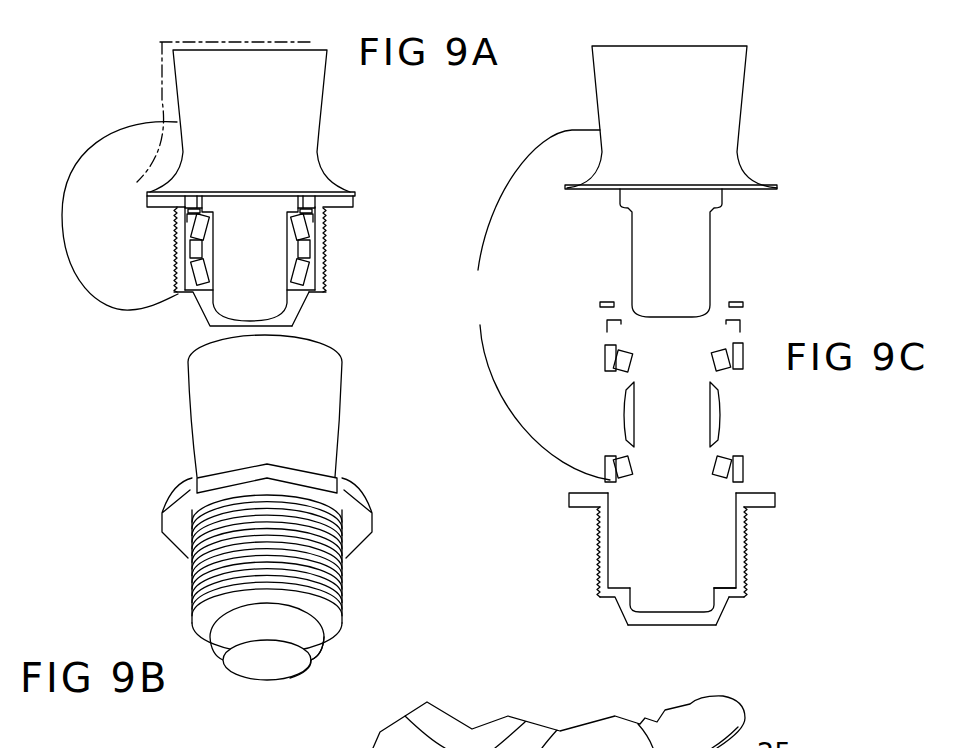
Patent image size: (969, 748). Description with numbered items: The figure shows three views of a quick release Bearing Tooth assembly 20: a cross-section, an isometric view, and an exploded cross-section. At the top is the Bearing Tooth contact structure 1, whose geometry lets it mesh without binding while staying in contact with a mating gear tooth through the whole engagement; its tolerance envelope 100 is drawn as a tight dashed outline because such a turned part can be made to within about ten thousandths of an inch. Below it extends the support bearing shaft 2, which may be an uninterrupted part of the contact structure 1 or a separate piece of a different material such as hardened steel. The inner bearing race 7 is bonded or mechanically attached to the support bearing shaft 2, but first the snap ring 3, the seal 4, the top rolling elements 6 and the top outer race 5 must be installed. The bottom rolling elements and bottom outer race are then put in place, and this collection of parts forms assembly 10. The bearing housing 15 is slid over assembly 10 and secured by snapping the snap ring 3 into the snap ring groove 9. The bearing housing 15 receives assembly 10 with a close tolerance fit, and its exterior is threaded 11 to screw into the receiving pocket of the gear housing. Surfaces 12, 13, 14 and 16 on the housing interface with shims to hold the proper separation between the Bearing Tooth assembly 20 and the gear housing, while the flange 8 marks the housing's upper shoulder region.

In FIG. 9A, the Bearing Tooth contact structure 1 is at (320, 126).
In FIG. 9B, the Bearing Tooth contact structure 1 is at (340, 418).
In FIG. 9C, the Bearing Tooth contact structure 1 is at (740, 135).
In FIG. 9A, the support bearing shaft 2 is at (217, 280).
In FIG. 9C, the support bearing shaft 2 is at (712, 268).
In FIG. 9A, the snap ring 3 is at (183, 218).
In FIG. 9C, the snap ring 3 is at (743, 304).
In FIG. 9A, the seal 4 is at (183, 240).
In FIG. 9C, the seal 4 is at (742, 325).
In FIG. 9A, the top outer race 5 is at (191, 294).
In FIG. 9C, the top outer race 5 is at (607, 455).
In FIG. 9A, the top rolling elements 6 is at (327, 265).
In FIG. 9C, the top rolling elements 6 is at (716, 457).
In FIG. 9A, the inner bearing race 7 is at (178, 277).
In FIG. 9C, the inner bearing race 7 is at (722, 411).
In FIG. 9A, the housing flange 8 is at (353, 200).
In FIG. 9B, the housing flange 8 is at (355, 498).
In FIG. 9C, the housing flange 8 is at (777, 498).
In FIG. 9A, the snap ring groove 9 is at (353, 212).
In FIG. 9C, the snap ring groove 9 is at (742, 498).
In FIG. 9A, the assembly 10 is at (112, 216).
In FIG. 9C, the assembly 10 is at (537, 305).
In FIG. 9A, the thread 11 is at (328, 242).
In FIG. 9B, the thread 11 is at (193, 573).
In FIG. 9C, the thread 11 is at (753, 537).
In FIG. 9A, the surface 12 is at (318, 306).
In FIG. 9B, the surface 12 is at (340, 642).
In FIG. 9C, the surface 12 is at (747, 596).
In FIG. 9A, the surface 13 is at (302, 318).
In FIG. 9B, the surface 13 is at (315, 655).
In FIG. 9C, the surface 13 is at (722, 614).
In FIG. 9A, the surface 14 is at (200, 338).
In FIG. 9B, the surface 14 is at (260, 678).
In FIG. 9C, the surface 14 is at (682, 627).
In FIG. 9A, the bearing housing 15 is at (148, 200).
In FIG. 9B, the bearing housing 15 is at (195, 617).
In FIG. 9C, the bearing housing 15 is at (633, 627).
In FIG. 9A, the surface 16 is at (180, 208).
In FIG. 9B, the surface 16 is at (350, 532).
In FIG. 9C, the surface 16 is at (580, 508).
In FIG. 9C, the Bearing Tooth assembly 20 is at (508, 462).
In FIG. 9A, the tolerance envelope 100 is at (162, 100).